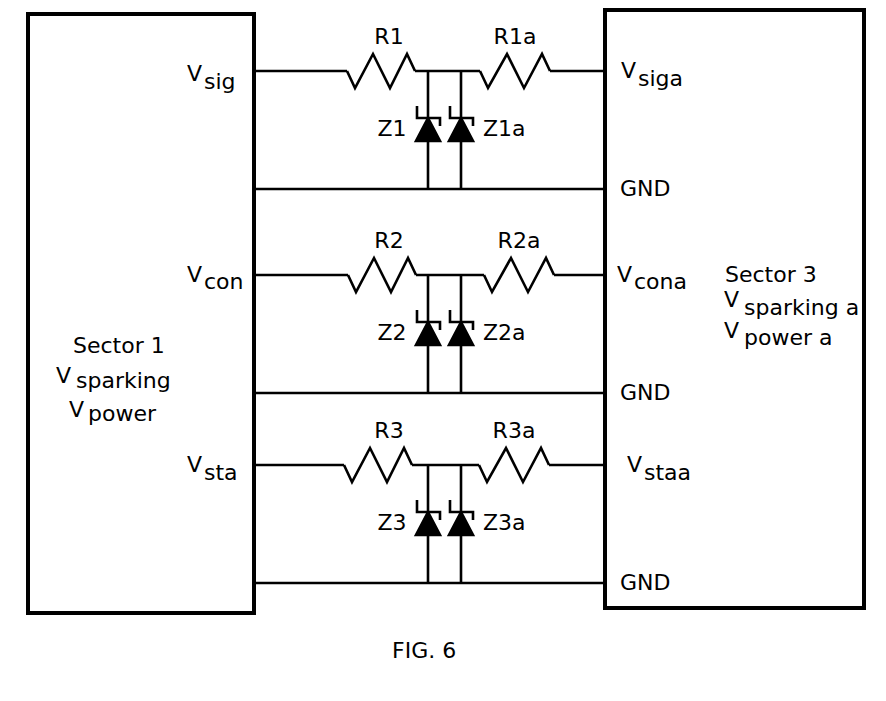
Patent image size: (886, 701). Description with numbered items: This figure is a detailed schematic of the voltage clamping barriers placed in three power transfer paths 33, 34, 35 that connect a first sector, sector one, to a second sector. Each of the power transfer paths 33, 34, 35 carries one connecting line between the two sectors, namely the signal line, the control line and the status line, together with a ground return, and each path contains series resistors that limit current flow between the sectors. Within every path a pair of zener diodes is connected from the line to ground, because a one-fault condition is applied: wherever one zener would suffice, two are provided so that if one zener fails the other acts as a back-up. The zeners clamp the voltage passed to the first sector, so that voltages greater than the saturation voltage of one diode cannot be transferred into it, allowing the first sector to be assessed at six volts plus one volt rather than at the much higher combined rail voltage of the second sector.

The power transfer path 33 is at (298, 71).
The power transfer path 34 is at (295, 275).
The power transfer path 35 is at (305, 465).